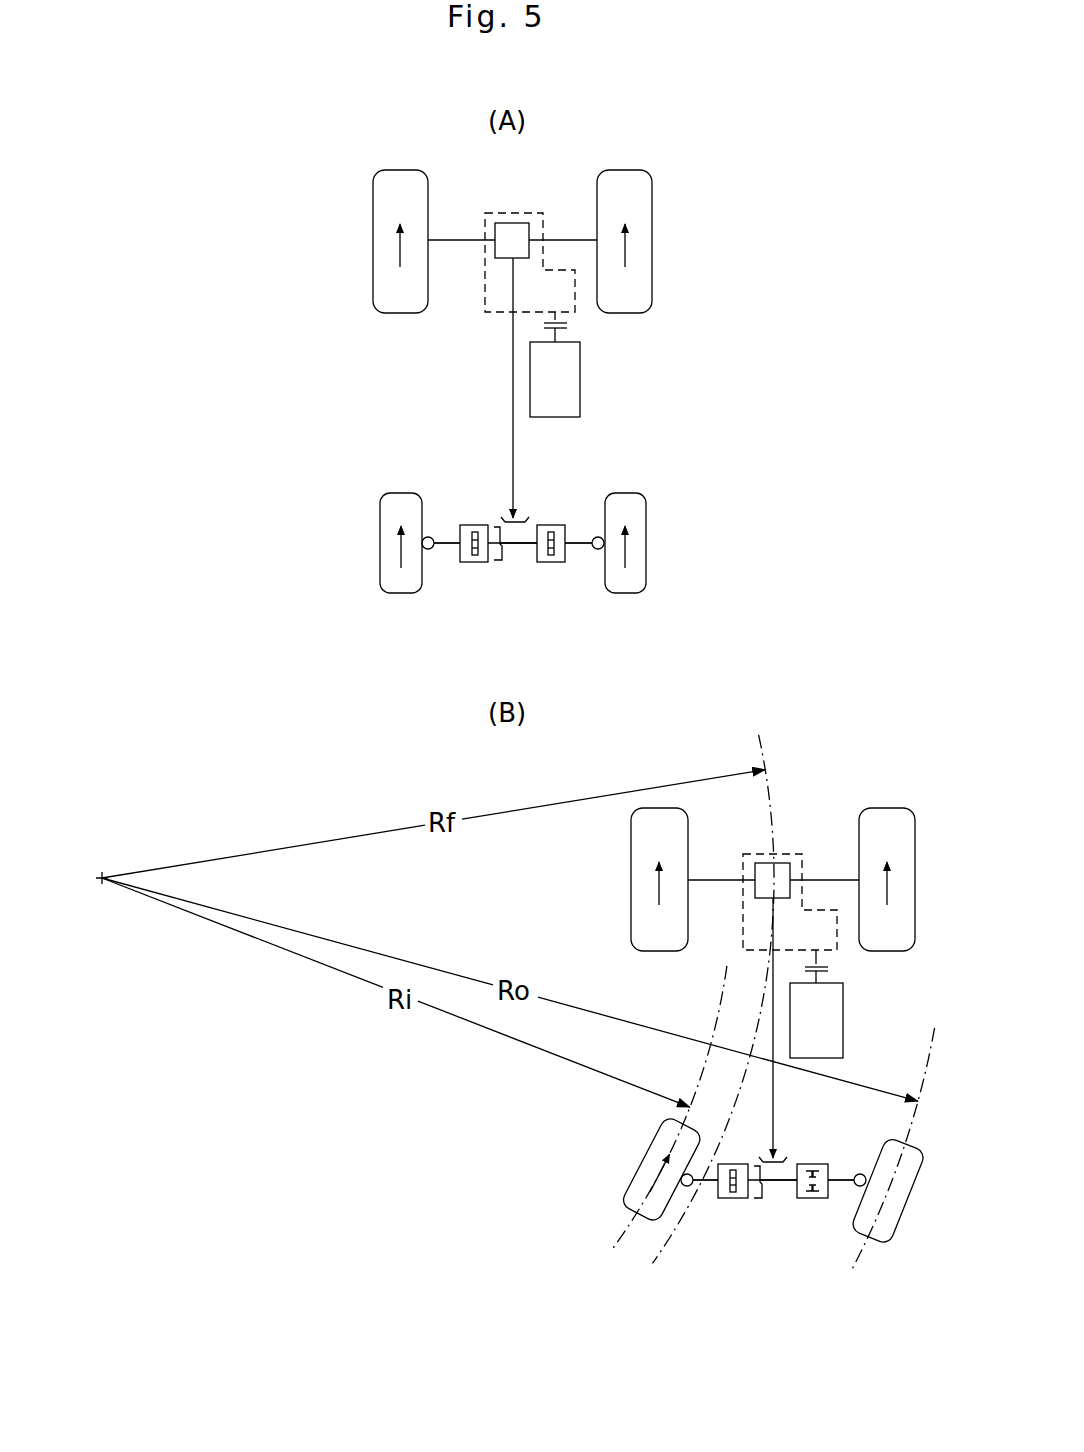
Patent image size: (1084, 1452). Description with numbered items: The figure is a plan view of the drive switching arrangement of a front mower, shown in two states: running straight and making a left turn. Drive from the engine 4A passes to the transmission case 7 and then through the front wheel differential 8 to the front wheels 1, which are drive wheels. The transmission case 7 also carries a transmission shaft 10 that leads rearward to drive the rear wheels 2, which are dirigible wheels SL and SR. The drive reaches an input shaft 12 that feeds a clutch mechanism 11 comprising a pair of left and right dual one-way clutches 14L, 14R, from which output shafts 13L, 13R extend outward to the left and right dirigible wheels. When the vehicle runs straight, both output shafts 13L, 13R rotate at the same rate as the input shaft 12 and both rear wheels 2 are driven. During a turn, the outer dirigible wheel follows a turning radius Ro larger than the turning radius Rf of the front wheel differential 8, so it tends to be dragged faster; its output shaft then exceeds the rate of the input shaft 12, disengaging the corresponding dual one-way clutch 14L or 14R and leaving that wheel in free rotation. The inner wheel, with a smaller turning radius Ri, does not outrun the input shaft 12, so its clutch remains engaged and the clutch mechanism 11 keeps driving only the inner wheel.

The front wheels 1 is at (373, 241).
The rear wheels 2 is at (385, 545).
The engine 4A is at (575, 383).
The transmission case 7 is at (485, 283).
The front wheel differential 8 is at (513, 230).
The transmission shaft 10 is at (513, 418).
The clutch mechanism 11 is at (499, 590).
The input shaft 12 is at (516, 547).
The left output shaft 13L is at (447, 548).
The right output shaft 13R is at (580, 548).
The left dual one-way clutch 14L is at (468, 525).
The right dual one-way clutch 14R is at (556, 525).